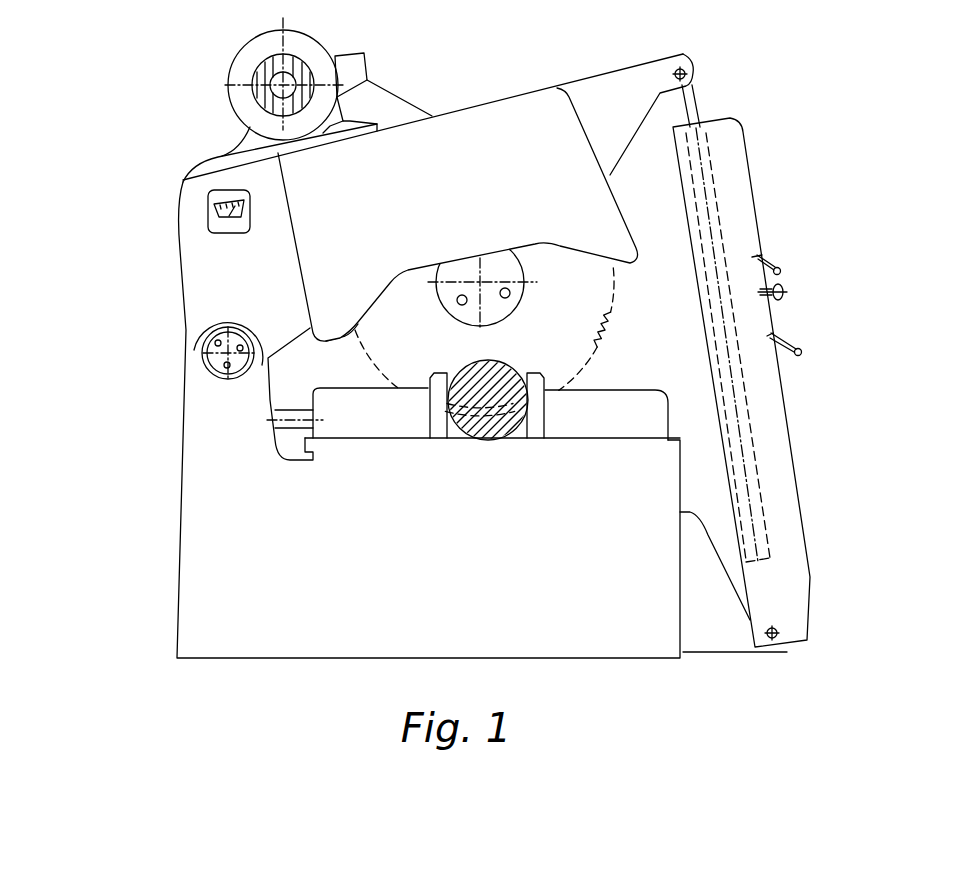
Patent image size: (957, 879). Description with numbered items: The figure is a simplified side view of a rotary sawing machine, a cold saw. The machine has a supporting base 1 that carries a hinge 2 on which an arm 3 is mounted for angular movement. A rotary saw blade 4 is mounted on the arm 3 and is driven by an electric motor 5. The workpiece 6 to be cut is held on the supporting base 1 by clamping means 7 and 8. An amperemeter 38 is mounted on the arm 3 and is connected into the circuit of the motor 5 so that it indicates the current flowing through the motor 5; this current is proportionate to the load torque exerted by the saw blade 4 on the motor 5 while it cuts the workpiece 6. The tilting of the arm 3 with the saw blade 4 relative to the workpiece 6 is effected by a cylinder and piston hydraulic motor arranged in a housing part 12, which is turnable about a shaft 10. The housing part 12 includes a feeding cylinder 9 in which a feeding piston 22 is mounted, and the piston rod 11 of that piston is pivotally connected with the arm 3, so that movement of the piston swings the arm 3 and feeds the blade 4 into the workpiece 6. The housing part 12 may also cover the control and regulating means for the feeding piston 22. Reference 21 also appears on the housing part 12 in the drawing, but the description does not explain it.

The base frame 1 is at (225, 573).
The adjusting knob 2 is at (196, 343).
The blade guard 3 is at (478, 134).
The support bracket 4 is at (387, 350).
The electric motor 5 is at (236, 88).
The workpiece 6 is at (500, 430).
The fixed vise jaw 7 is at (370, 425).
The movable vise jaw 8 is at (602, 425).
The guide slot 9 is at (757, 521).
The lower pivot 10 is at (778, 638).
The connecting rod 11 is at (690, 110).
The guide bar 12 is at (778, 467).
The clamping screws 21 is at (784, 289).
The rod axis 22 is at (747, 418).
The indicator gauge 38 is at (208, 214).